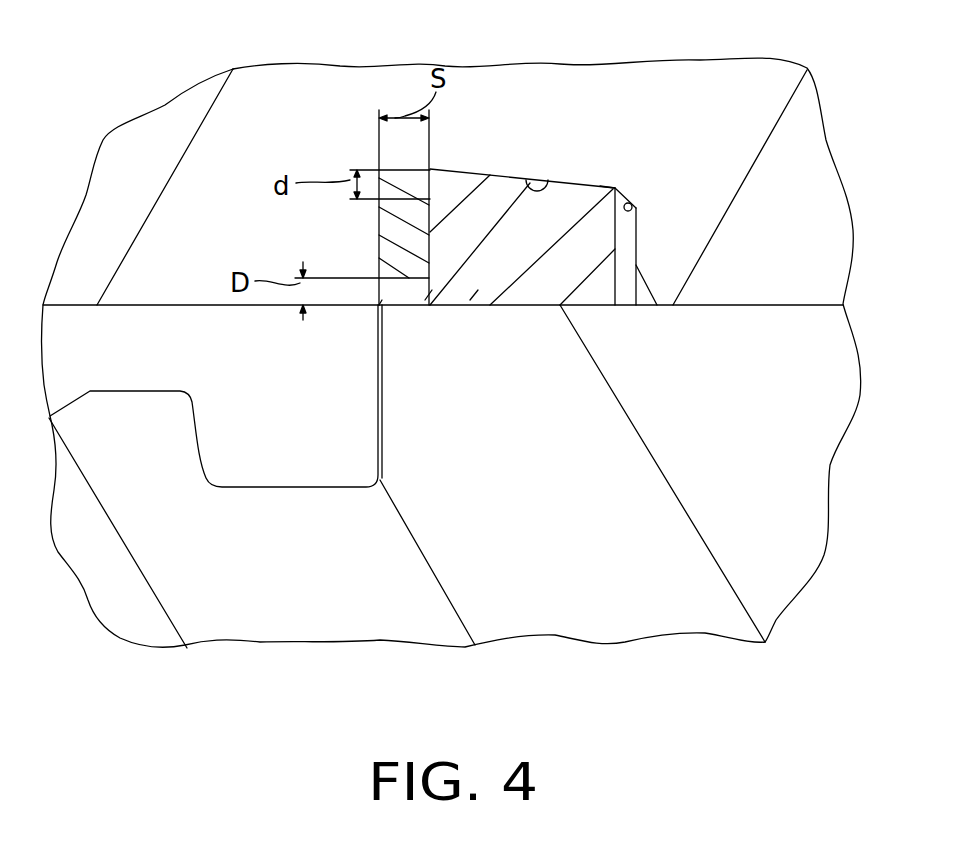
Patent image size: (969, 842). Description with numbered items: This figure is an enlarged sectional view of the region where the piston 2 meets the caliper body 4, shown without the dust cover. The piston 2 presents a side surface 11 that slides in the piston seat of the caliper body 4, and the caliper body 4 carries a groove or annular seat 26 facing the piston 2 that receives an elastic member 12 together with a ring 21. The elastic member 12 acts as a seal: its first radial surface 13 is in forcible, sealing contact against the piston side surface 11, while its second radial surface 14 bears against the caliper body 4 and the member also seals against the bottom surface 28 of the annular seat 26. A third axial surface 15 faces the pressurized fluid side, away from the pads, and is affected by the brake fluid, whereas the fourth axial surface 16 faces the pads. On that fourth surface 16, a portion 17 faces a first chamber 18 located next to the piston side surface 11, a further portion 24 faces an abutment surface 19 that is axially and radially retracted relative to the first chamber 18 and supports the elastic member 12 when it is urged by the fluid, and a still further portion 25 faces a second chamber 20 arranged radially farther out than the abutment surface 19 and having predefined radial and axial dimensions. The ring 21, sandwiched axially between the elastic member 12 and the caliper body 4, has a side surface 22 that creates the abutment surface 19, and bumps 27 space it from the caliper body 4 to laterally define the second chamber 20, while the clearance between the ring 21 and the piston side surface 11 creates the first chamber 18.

The piston 2 is at (526, 520).
The caliper body 4 is at (248, 175).
The piston side surface 11 is at (730, 305).
The elastic member 12 is at (551, 257).
The first radial surface 13 is at (528, 300).
The second radial surface 14 is at (584, 187).
The third axial surface 15 is at (636, 256).
The fourth axial surface 16 is at (429, 268).
The portion of the fourth surface 17 is at (429, 287).
The first chamber 18 is at (396, 300).
The abutment surface 19 is at (432, 232).
The second chamber 20 is at (418, 177).
The ring 21 is at (412, 243).
The ring side surface 22 is at (462, 292).
The further portion of the fourth surface 24 is at (429, 218).
The still further portion of the fourth surface 25 is at (427, 188).
The annular seat 26 is at (636, 208).
The bumps 27 is at (398, 178).
The bottom surface 28 is at (555, 186).